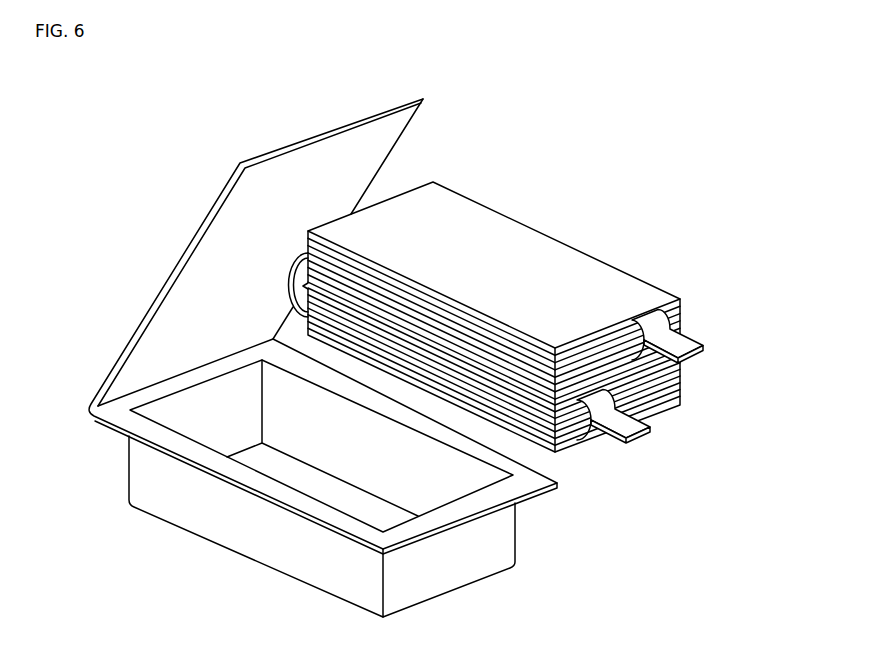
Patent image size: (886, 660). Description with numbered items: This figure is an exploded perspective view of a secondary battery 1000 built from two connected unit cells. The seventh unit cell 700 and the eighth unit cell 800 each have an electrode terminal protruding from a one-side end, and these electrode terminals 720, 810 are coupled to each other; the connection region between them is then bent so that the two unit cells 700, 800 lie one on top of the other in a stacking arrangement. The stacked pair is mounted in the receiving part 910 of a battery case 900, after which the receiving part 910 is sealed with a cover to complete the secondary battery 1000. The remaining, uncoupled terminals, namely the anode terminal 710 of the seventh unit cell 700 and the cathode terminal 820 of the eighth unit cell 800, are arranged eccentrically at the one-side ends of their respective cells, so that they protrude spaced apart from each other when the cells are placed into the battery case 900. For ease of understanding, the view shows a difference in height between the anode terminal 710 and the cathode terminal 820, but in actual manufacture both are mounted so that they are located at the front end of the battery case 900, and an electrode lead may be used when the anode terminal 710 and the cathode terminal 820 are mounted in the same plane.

The secondary battery 1000 is at (78, 167).
The battery case 900 is at (180, 265).
The receiving part 910 is at (280, 468).
The seventh unit cell 700 is at (657, 290).
The anode terminal 710 is at (687, 342).
The electrode terminal 720 is at (298, 262).
The eighth unit cell 800 is at (673, 410).
The electrode terminal 810 is at (293, 303).
The cathode terminal 820 is at (625, 427).